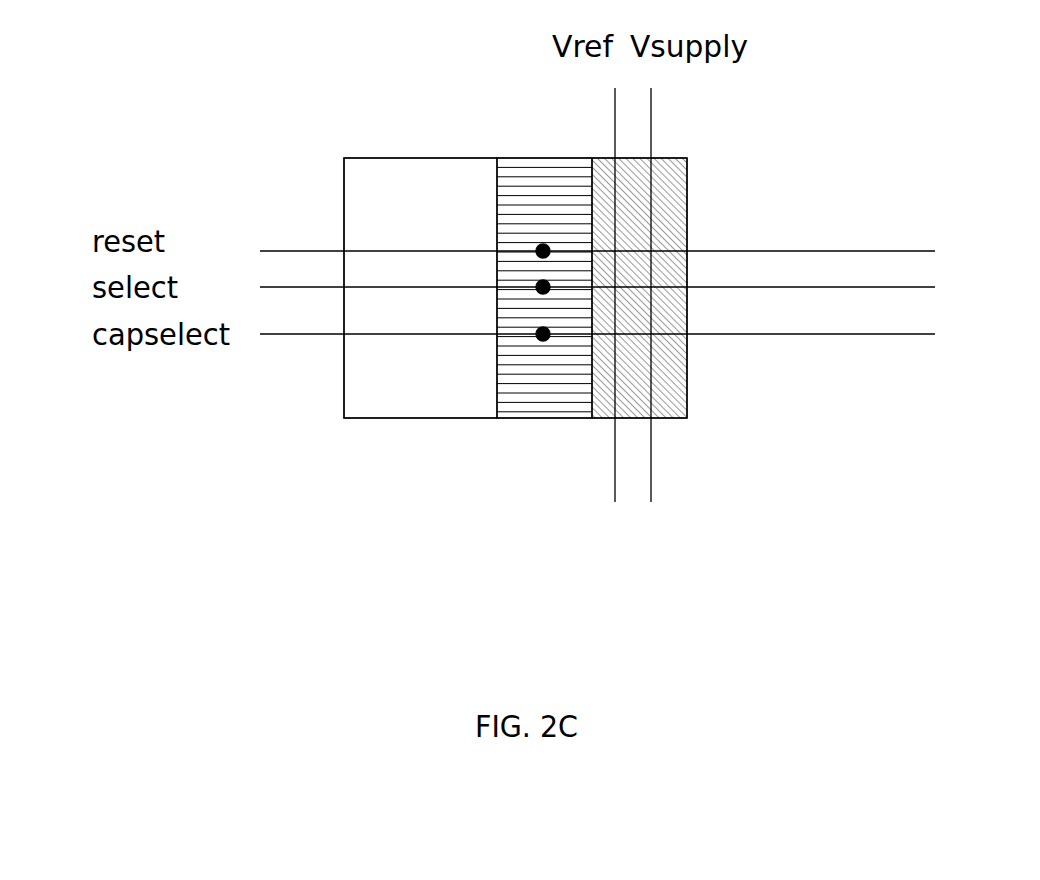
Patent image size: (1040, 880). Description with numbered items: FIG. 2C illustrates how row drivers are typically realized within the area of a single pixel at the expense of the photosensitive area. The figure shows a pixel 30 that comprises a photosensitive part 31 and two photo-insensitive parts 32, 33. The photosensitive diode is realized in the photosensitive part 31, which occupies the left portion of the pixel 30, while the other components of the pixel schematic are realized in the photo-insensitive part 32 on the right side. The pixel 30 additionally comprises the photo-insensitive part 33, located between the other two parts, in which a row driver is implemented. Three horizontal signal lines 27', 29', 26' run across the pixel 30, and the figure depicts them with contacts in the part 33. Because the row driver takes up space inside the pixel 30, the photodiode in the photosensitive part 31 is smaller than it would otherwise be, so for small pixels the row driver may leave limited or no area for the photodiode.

The pixel 30 is at (352, 418).
The photosensitive part 31 is at (421, 205).
The photo-insensitive part 32 is at (677, 205).
The photo-insensitive part 33 is at (555, 418).
The reset line 27' is at (637, 242).
The select line 29' is at (637, 287).
The capselect line 26' is at (637, 332).